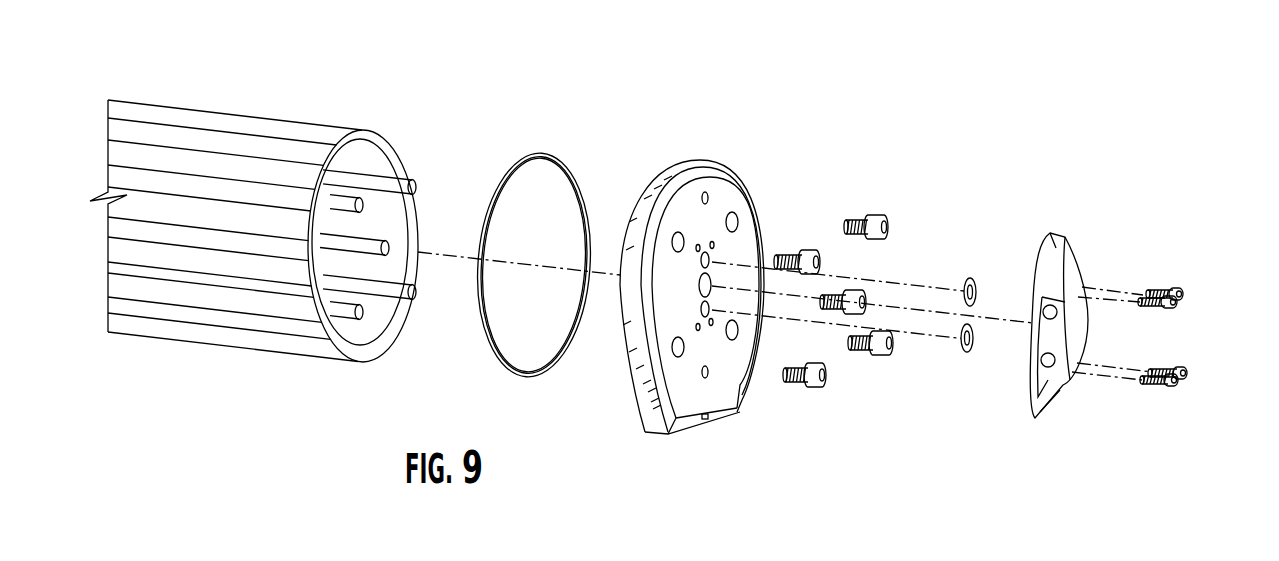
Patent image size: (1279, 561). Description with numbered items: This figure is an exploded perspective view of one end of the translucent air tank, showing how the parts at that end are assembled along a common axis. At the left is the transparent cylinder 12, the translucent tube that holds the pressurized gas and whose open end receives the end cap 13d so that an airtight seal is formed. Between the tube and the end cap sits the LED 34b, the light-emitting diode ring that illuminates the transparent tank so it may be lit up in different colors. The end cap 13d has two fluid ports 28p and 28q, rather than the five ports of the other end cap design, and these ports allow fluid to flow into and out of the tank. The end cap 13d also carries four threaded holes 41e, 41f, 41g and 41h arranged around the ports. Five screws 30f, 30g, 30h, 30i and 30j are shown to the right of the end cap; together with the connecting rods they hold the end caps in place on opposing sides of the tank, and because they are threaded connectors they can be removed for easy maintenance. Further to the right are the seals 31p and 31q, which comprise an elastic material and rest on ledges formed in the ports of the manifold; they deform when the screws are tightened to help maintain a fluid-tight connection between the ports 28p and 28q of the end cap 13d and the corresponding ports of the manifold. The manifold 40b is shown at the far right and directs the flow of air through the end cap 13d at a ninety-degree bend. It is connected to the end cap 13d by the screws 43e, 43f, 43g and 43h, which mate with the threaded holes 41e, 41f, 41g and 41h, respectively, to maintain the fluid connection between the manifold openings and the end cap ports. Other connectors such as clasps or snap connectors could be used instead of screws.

The transparent cylinder 12 is at (225, 112).
The LED 34b is at (540, 155).
The end cap 13d is at (692, 158).
The fluid port 28p is at (700, 261).
The fluid port 28q is at (700, 311).
The threaded hole 41e is at (713, 244).
The threaded hole 41f is at (699, 246).
The threaded hole 41g is at (698, 332).
The threaded hole 41h is at (712, 326).
The screw 30f is at (873, 218).
The screw 30g is at (805, 256).
The screw 30h is at (856, 293).
The screw 30i is at (815, 386).
The screw 30j is at (877, 356).
The seal 31p is at (972, 280).
The seal 31q is at (966, 352).
The manifold 40b is at (1058, 231).
The screw 43e is at (1182, 291).
The screw 43f is at (1168, 308).
The screw 43g is at (1174, 388).
The screw 43h is at (1185, 372).